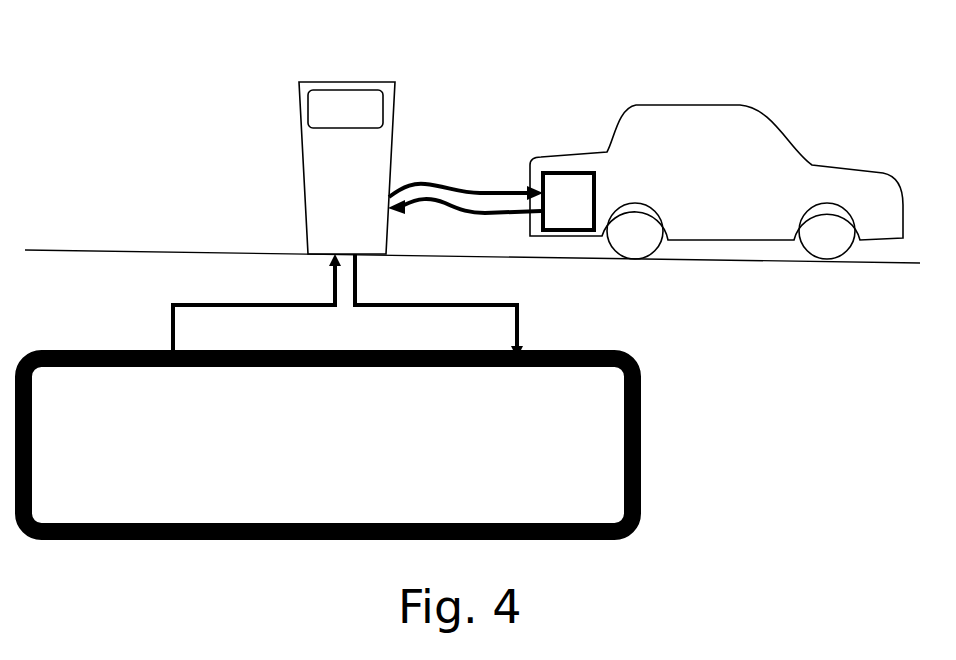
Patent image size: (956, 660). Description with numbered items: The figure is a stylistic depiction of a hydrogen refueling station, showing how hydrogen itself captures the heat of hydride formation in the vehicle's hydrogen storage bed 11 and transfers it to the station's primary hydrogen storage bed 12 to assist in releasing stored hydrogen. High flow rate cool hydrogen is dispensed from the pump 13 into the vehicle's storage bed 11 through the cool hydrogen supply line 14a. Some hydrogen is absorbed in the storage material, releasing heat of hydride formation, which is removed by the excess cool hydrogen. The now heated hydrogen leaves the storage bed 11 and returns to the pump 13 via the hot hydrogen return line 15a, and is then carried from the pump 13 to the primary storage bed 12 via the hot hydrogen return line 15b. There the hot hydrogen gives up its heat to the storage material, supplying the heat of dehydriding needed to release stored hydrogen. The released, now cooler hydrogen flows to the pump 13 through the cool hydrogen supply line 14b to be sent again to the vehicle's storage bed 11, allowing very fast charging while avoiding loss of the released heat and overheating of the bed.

The vehicle's hydrogen storage bed 11 is at (564, 156).
The station's primary hydrogen storage bed 12 is at (655, 408).
The pump 13 is at (317, 69).
The cool hydrogen supply line 14a is at (437, 160).
The cool hydrogen supply line 14b is at (158, 302).
The hot hydrogen return line 15a is at (429, 225).
The hot hydrogen return line 15b is at (537, 309).